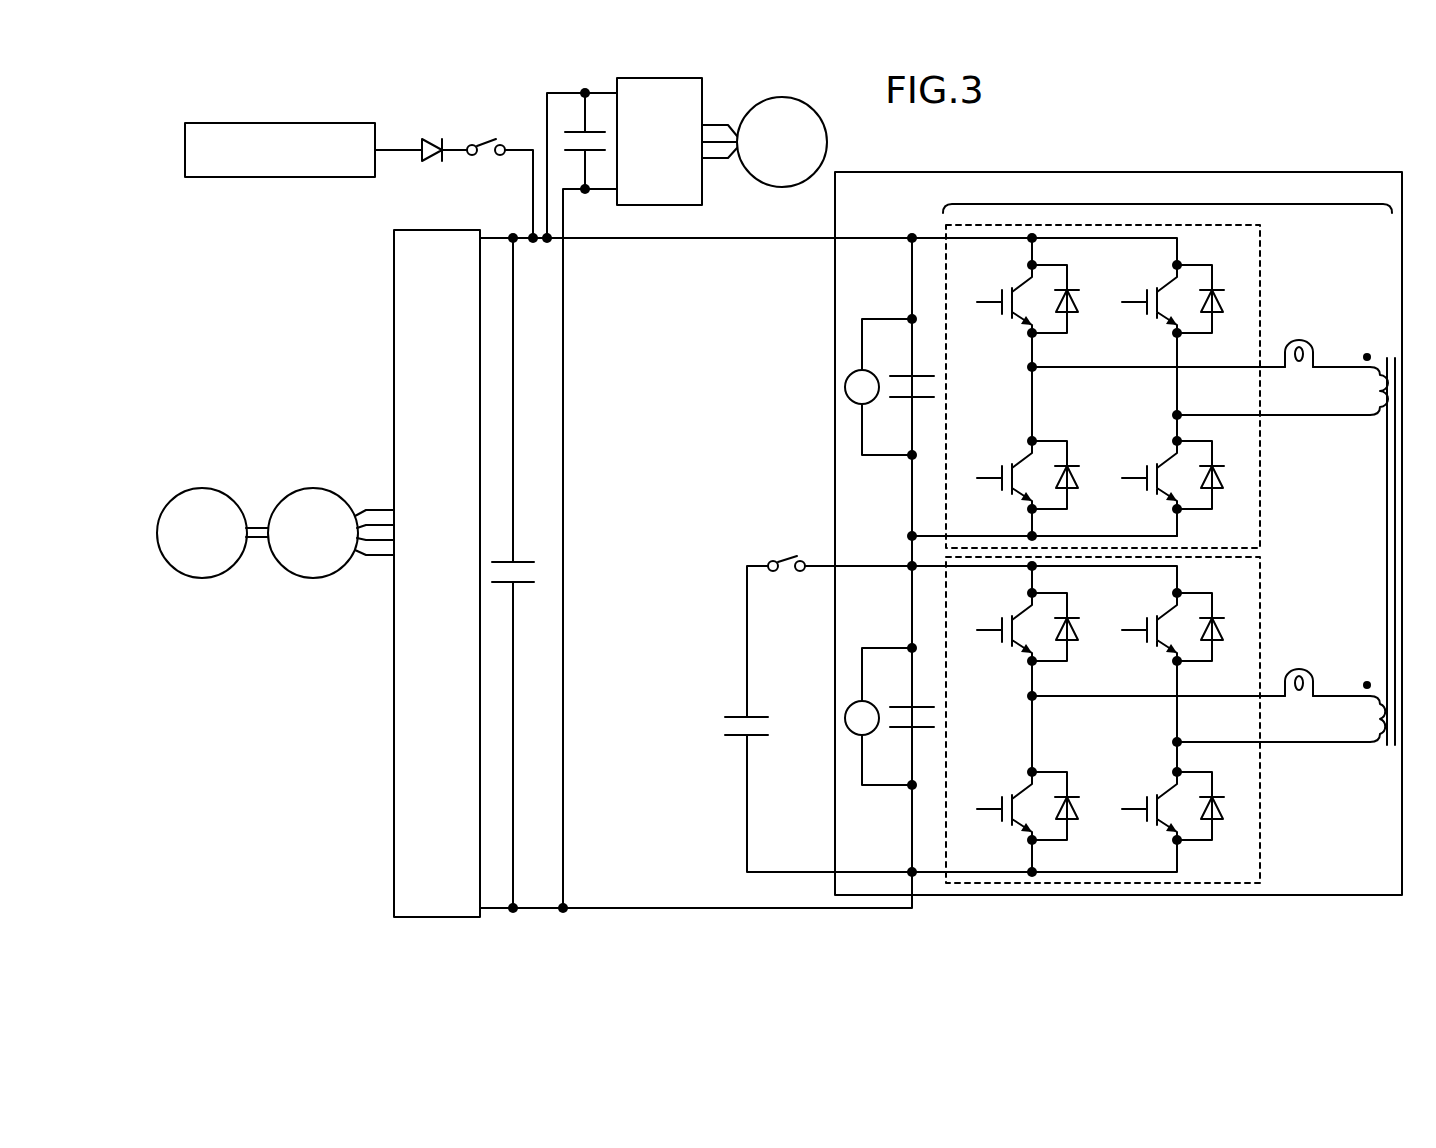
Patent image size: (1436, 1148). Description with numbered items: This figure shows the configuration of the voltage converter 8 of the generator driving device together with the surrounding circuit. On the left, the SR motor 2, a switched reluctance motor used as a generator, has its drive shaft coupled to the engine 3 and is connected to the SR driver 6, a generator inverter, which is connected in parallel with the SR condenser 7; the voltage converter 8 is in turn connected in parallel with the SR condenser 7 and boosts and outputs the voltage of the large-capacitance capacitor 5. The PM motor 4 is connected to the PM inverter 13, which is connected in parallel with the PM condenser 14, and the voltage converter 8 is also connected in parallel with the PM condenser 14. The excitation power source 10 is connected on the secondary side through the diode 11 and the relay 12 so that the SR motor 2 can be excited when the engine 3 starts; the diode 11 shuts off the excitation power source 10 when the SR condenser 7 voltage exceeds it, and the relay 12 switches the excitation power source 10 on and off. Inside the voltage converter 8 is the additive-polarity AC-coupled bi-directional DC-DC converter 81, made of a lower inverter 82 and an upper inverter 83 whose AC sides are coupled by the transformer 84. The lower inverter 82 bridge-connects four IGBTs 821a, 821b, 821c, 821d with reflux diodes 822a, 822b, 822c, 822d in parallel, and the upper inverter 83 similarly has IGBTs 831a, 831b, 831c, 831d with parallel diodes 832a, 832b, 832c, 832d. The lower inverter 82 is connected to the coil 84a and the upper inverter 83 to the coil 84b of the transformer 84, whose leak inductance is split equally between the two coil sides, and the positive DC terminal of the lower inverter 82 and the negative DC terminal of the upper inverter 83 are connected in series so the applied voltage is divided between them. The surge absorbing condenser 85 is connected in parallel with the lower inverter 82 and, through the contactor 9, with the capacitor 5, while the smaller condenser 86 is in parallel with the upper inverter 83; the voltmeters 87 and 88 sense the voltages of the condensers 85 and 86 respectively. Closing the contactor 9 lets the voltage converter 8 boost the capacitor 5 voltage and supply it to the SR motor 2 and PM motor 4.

The SR motor 2 is at (340, 494).
The engine 3 is at (229, 494).
The PM motor 4 is at (826, 121).
The capacitor 5 is at (754, 716).
The SR driver 6 is at (440, 231).
The SR condenser 7 is at (519, 562).
The voltage converter 8 is at (1322, 172).
The contactor 9 is at (782, 560).
The excitation power source 10 is at (323, 126).
The diode 11 is at (437, 129).
The relay 12 is at (483, 141).
The PM inverter 13 is at (702, 106).
The PM condenser 14 is at (572, 133).
The AC-coupled bi-directional DC-DC converter 81 is at (1167, 195).
The lower inverter 82 is at (1260, 588).
The upper inverter 83 is at (1260, 262).
The transformer 84 is at (1372, 512).
The coil 84a is at (1364, 682).
The coil 84b is at (1364, 354).
The condenser 85 is at (900, 706).
The condenser 86 is at (900, 375).
The voltmeter 87 is at (871, 733).
The voltmeter 88 is at (871, 402).
The IGBT 821a is at (1015, 616).
The IGBT 821b is at (1160, 616).
The IGBT 821c is at (1015, 795).
The IGBT 821d is at (1160, 795).
The diode 822a is at (1078, 628).
The diode 822b is at (1228, 630).
The diode 822c is at (1078, 818).
The diode 822d is at (1225, 808).
The IGBT 831a is at (1015, 288).
The IGBT 831b is at (1160, 288).
The IGBT 831c is at (1015, 464).
The IGBT 831d is at (1160, 464).
The diode 832a is at (1078, 300).
The diode 832b is at (1228, 302).
The diode 832c is at (1078, 488).
The diode 832d is at (1225, 470).